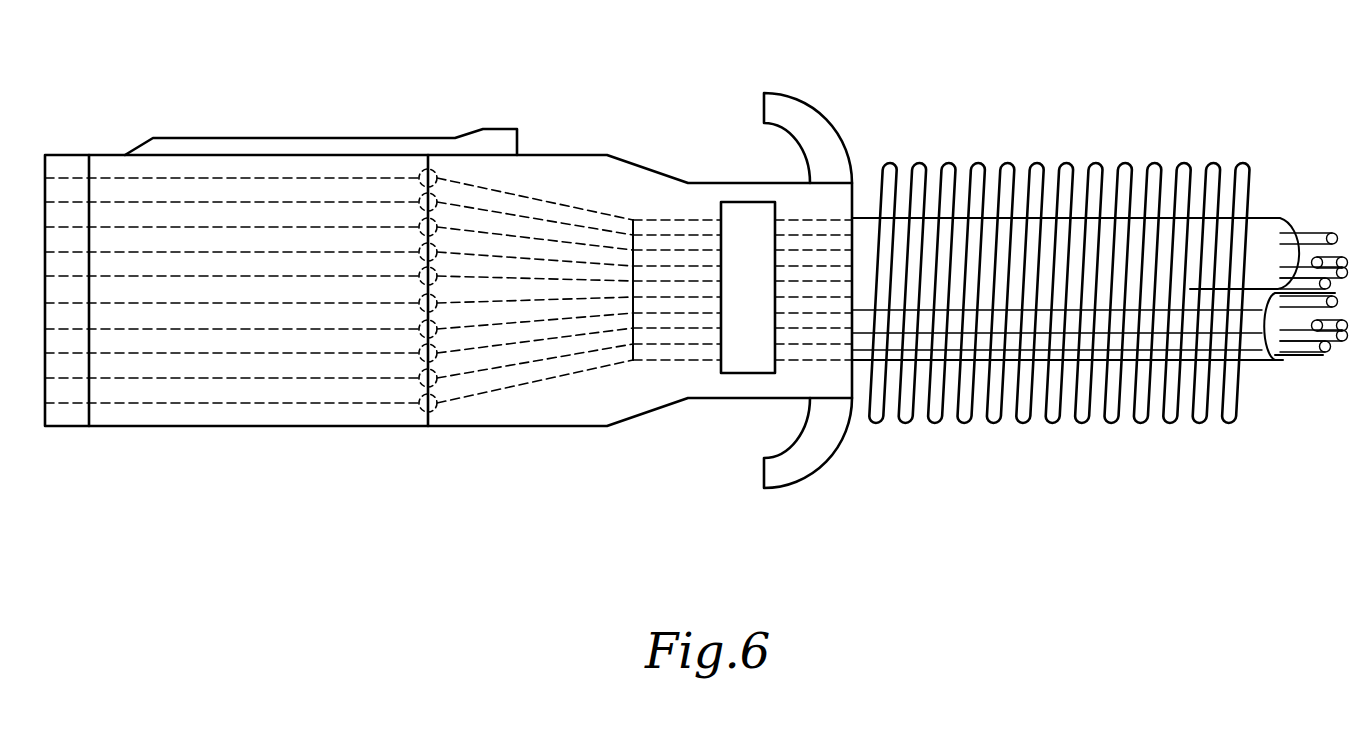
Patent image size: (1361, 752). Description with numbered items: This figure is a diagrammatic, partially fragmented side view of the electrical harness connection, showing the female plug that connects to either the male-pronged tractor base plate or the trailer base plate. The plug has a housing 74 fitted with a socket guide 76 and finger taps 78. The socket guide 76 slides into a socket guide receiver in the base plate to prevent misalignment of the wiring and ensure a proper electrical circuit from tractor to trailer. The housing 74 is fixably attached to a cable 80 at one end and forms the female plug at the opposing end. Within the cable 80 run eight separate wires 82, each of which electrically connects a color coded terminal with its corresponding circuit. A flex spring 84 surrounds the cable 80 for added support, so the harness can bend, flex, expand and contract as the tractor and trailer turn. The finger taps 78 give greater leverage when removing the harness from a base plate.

The housing 74 is at (328, 420).
The socket guide 76 is at (487, 143).
The finger taps 78 is at (778, 117).
The cable 80 is at (1280, 217).
The wires 82 is at (1343, 353).
The flex spring 84 is at (1005, 160).